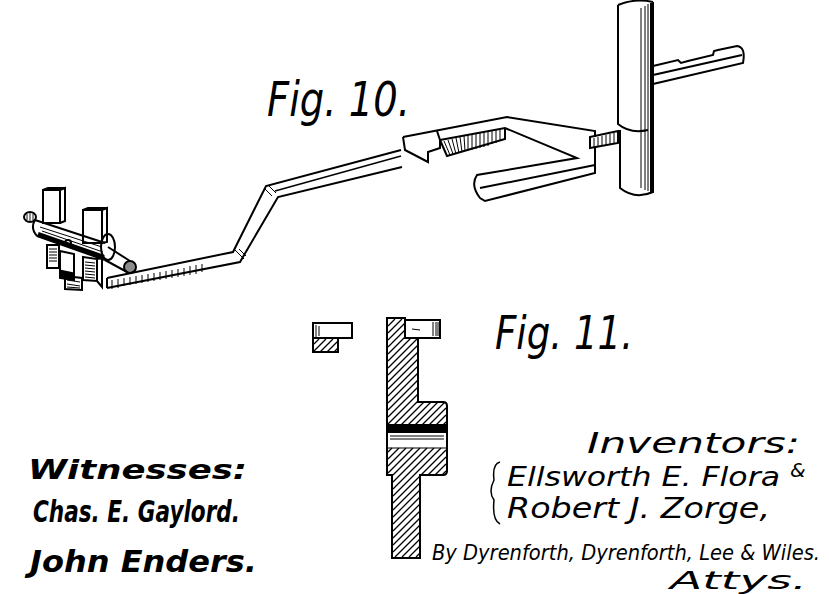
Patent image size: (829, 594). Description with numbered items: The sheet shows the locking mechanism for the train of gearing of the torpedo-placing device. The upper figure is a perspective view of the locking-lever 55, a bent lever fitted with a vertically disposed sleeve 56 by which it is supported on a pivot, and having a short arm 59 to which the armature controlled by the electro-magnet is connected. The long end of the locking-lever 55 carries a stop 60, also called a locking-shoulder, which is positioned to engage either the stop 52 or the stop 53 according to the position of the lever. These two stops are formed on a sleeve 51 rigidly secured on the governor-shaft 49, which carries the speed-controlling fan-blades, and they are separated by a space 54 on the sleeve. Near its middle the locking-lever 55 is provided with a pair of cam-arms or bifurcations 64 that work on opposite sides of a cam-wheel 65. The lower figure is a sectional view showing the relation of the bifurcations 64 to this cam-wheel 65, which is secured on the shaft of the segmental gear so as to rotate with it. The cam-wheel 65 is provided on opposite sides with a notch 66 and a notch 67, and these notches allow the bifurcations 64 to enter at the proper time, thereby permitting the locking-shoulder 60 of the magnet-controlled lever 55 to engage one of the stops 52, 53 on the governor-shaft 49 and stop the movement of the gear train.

In FIG. 10, the governor-shaft 49 is at (137, 258).
In FIG. 10, the sleeve 51 is at (137, 233).
In FIG. 10, the stop 52 is at (45, 190).
In FIG. 10, the stop 53 is at (104, 213).
In FIG. 10, the space 54 is at (72, 212).
In FIG. 10, the locking-lever 55 is at (510, 140).
In FIG. 11, the locking-lever 55 is at (317, 352).
In FIG. 10, the vertically disposed sleeve 56 is at (655, 160).
In FIG. 10, the short arm 59 is at (713, 75).
In FIG. 10, the stop 60 is at (72, 293).
In FIG. 10, the cam-arms or bifurcations 64 is at (473, 190).
In FIG. 11, the cam-arms or bifurcations 64 is at (387, 323).
In FIG. 11, the cam-wheel 65 is at (418, 380).
In FIG. 11, the notch 66 is at (408, 318).
In FIG. 11, the notch 67 is at (390, 495).